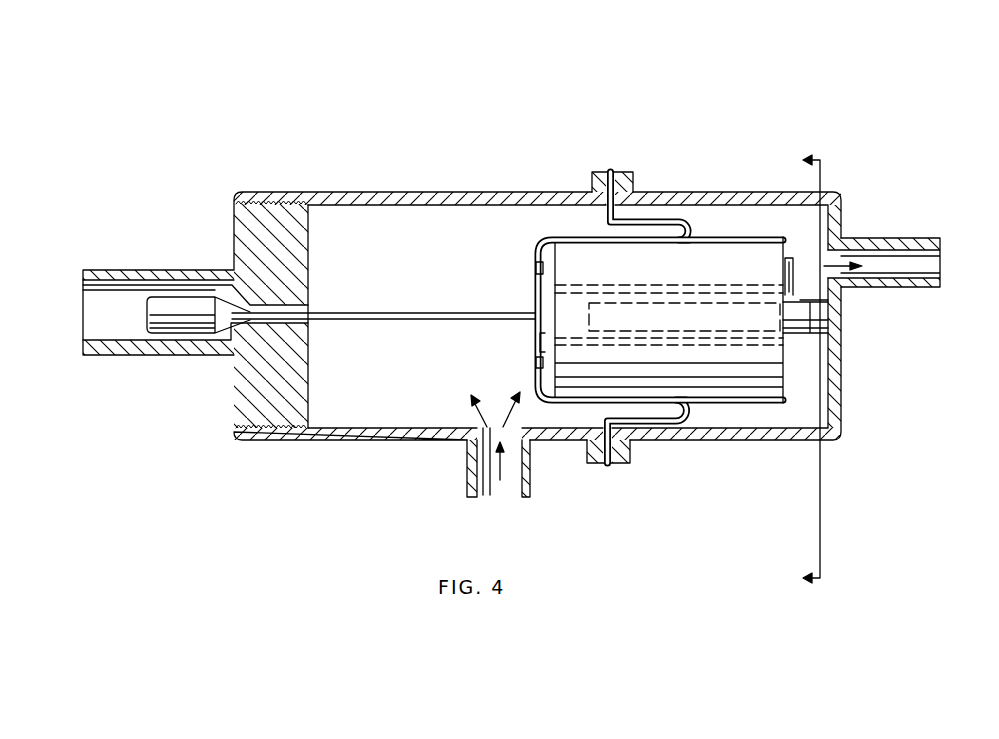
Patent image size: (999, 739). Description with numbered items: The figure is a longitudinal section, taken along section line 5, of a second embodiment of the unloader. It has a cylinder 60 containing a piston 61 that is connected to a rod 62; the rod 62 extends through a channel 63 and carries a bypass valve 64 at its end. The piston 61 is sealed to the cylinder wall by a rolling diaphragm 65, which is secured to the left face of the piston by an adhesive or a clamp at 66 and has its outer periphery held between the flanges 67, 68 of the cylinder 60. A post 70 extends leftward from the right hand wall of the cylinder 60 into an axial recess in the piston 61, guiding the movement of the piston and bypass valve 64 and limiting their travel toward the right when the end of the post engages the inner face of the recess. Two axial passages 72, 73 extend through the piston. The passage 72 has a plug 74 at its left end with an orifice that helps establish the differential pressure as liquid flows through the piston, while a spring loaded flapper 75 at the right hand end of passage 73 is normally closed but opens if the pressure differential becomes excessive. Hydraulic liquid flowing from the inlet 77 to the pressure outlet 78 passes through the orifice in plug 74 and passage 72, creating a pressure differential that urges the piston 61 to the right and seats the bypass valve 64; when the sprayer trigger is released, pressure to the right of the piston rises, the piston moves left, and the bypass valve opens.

The section line 5 is at (798, 370).
The cylinder 60 is at (395, 195).
The piston 61 is at (681, 370).
The rod 62 is at (423, 312).
The channel 63 is at (278, 305).
The bypass valve 64 is at (180, 305).
The rolling diaphragm 65 is at (688, 226).
The clamp 66 is at (536, 266).
The flange 67 is at (636, 175).
The flange 68 is at (598, 456).
The post 70 is at (808, 314).
The axial passage 72 is at (760, 348).
The axial passage 73 is at (800, 300).
The plug 74 is at (538, 343).
The spring loaded flapper 75 is at (785, 288).
The inlet 77 is at (510, 488).
The pressure outlet 78 is at (928, 270).